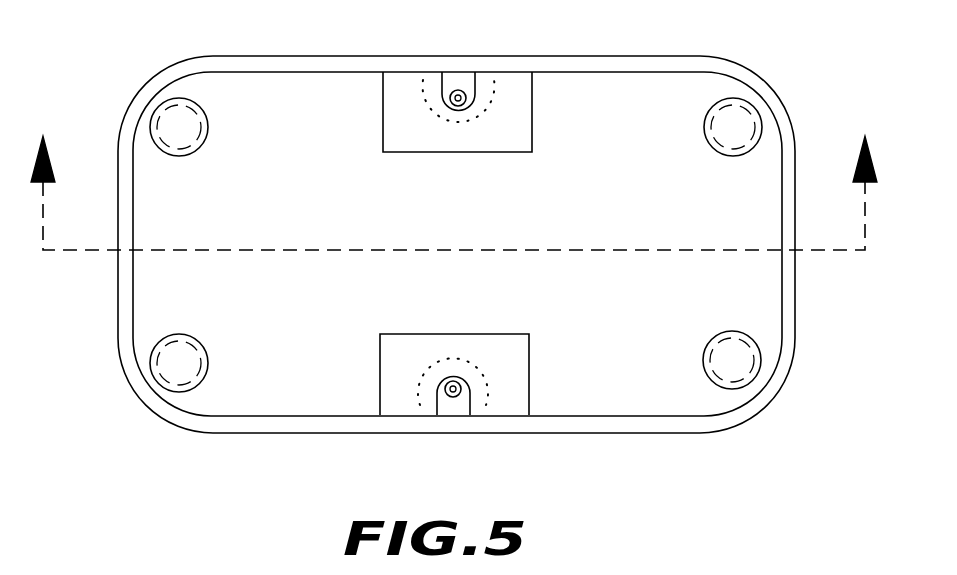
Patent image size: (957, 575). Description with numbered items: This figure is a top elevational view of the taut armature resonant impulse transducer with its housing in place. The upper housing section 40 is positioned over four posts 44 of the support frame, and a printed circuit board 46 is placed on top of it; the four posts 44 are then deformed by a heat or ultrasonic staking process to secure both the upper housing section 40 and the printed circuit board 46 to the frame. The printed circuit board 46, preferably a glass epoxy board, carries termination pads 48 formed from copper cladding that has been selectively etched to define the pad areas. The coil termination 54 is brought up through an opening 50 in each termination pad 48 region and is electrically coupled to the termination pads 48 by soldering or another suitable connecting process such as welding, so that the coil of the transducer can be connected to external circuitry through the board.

The upper housing section 40 is at (265, 55).
The posts 44 is at (173, 120).
The printed circuit board 46 is at (650, 110).
The termination pads 48 is at (517, 100).
The slots 50 is at (465, 78).
The coil termination 54 is at (456, 87).